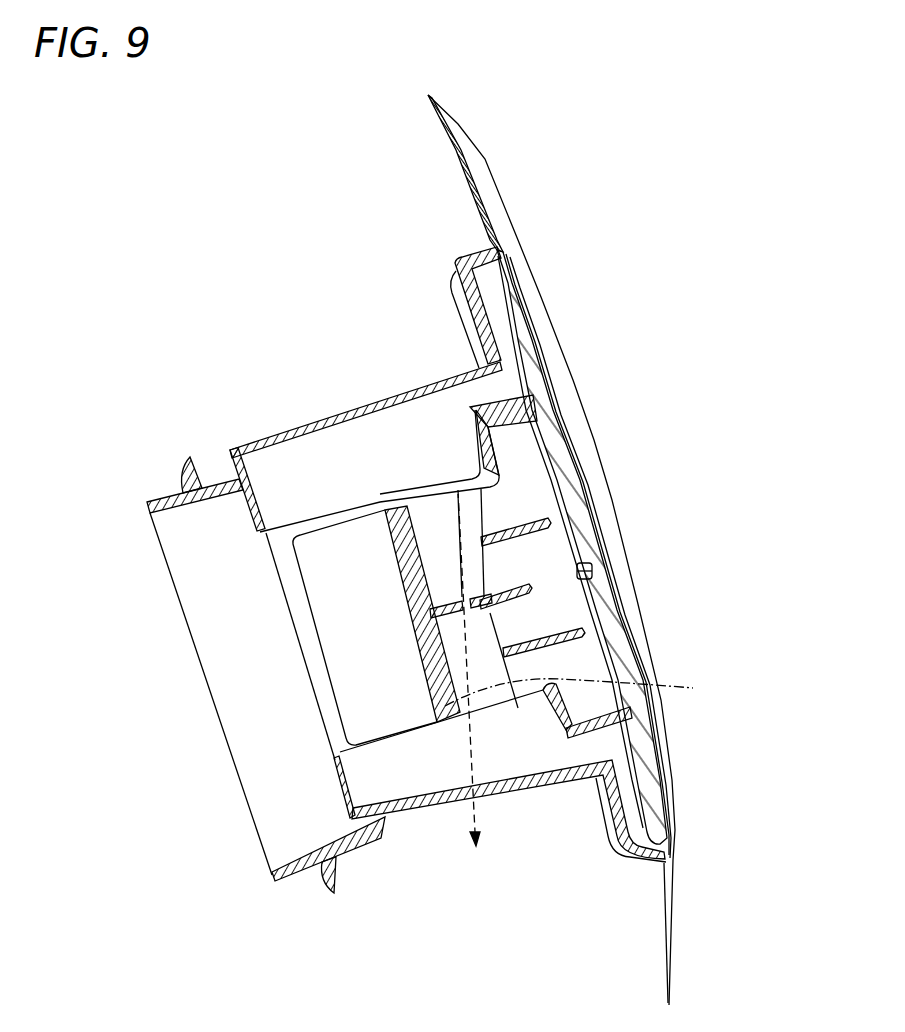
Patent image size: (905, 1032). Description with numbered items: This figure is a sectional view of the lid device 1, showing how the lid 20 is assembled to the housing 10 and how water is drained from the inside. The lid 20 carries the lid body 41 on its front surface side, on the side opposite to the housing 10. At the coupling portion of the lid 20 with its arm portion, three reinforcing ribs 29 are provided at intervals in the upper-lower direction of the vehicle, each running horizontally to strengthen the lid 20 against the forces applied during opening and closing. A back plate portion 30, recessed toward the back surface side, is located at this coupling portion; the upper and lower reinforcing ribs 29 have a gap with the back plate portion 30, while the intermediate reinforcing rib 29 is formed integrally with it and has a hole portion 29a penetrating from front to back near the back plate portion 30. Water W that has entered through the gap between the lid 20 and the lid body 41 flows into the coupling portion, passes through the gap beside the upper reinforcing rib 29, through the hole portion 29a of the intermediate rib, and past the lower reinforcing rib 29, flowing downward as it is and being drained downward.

The lid device 1 is at (565, 167).
The housing 10 is at (430, 570).
The lid 20 is at (594, 550).
The reinforcing ribs 29 is at (540, 520).
The hole portion 29a is at (460, 598).
The back plate portion 30 is at (400, 542).
The lid body 41 is at (598, 576).
The water W is at (581, 692).